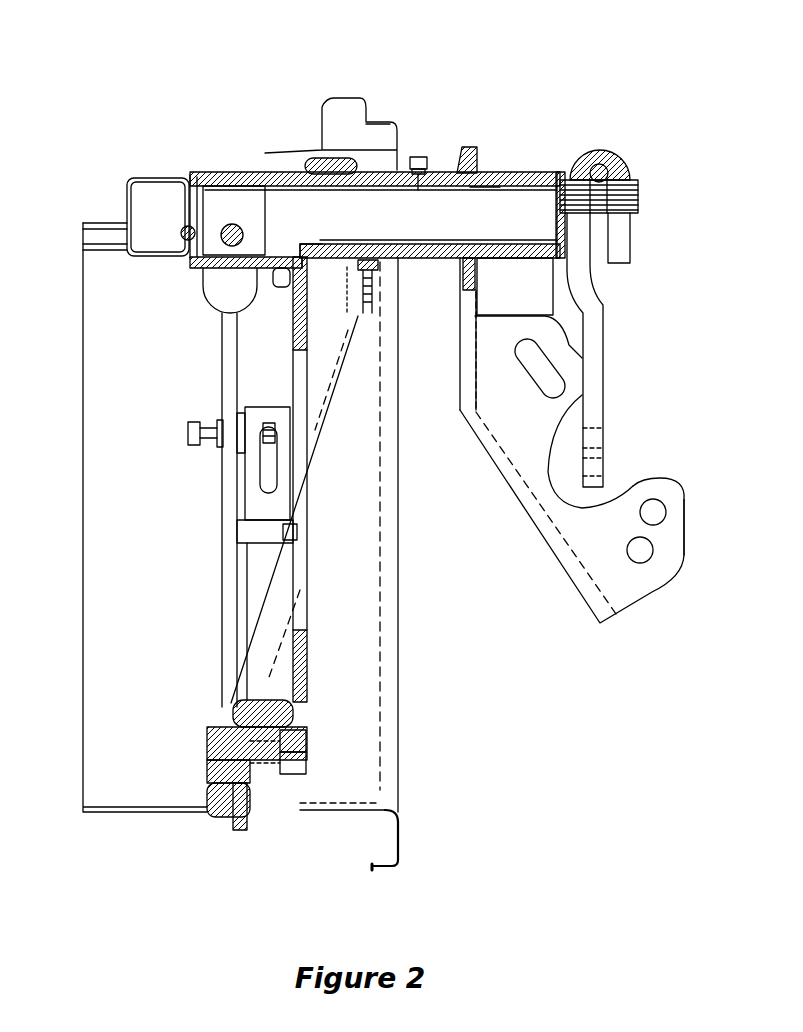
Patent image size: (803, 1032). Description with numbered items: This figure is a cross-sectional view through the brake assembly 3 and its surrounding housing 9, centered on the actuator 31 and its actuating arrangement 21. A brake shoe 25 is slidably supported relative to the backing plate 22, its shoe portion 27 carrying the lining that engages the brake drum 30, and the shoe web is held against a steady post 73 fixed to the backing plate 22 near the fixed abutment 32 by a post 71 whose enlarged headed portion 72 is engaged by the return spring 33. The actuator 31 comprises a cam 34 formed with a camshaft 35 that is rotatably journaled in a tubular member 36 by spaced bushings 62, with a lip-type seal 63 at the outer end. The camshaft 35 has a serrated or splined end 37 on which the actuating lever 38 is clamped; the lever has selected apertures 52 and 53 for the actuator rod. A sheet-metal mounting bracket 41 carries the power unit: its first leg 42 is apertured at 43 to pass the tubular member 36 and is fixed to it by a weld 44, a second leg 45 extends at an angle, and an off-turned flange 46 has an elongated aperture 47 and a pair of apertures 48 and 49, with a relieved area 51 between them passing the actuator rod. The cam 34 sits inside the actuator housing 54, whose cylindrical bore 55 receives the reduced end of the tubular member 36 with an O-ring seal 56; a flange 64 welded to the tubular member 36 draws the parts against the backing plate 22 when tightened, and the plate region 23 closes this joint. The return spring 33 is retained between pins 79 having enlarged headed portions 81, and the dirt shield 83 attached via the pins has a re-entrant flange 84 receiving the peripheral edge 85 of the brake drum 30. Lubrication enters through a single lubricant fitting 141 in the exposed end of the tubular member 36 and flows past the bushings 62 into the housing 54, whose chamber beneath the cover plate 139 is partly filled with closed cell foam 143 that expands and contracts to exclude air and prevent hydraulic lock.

The mounting assembly 3 is at (652, 333).
The frame housing 9 is at (376, 754).
The adjustment mechanism 21 is at (477, 65).
The backing plate 22 is at (316, 667).
The plate flange 23 is at (307, 618).
The brake shoe 25 is at (72, 392).
The shoe portion 27 is at (223, 343).
The brake drum 30 is at (344, 96).
The actuator 31 is at (224, 135).
The fixed abutment 32 is at (209, 826).
The return spring 33 is at (233, 582).
The cam 34 is at (232, 187).
The camshaft 35 is at (441, 172).
The tubular member 36 is at (515, 172).
The serrated or splined end 37 is at (636, 192).
The actuating lever 38 is at (603, 310).
The mounting bracket 41 is at (550, 578).
The first leg 42 is at (460, 320).
The aperture 43 is at (486, 174).
The weld 44 is at (458, 265).
The second leg 45 is at (545, 523).
The off-turned flange 46 is at (686, 498).
The elongated aperture 47 is at (547, 377).
The aperture 48 is at (654, 525).
The aperture 49 is at (646, 562).
The relieved area 51 is at (613, 500).
The aperture 52 is at (603, 428).
The aperture 53 is at (595, 467).
The actuator housing 54 is at (205, 177).
The cylindrical bore 55 is at (307, 150).
The O-ring seal 56 is at (300, 232).
The bushing 62 is at (552, 160).
The lip-type seal 63 is at (558, 261).
The flange 64 is at (325, 433).
The post 71 is at (193, 447).
The enlarged headed portion 72 is at (267, 423).
The steady post 73 is at (260, 518).
The pin 79 is at (300, 697).
The enlarged headed portion 81 is at (300, 724).
The dirt shield 83 is at (414, 830).
The re-entrant flange 84 is at (378, 870).
The peripheral edge 85 is at (380, 120).
The cover plate 139 is at (130, 180).
The lubricant fitting 141 is at (418, 157).
The closed cell foam 143 is at (123, 207).